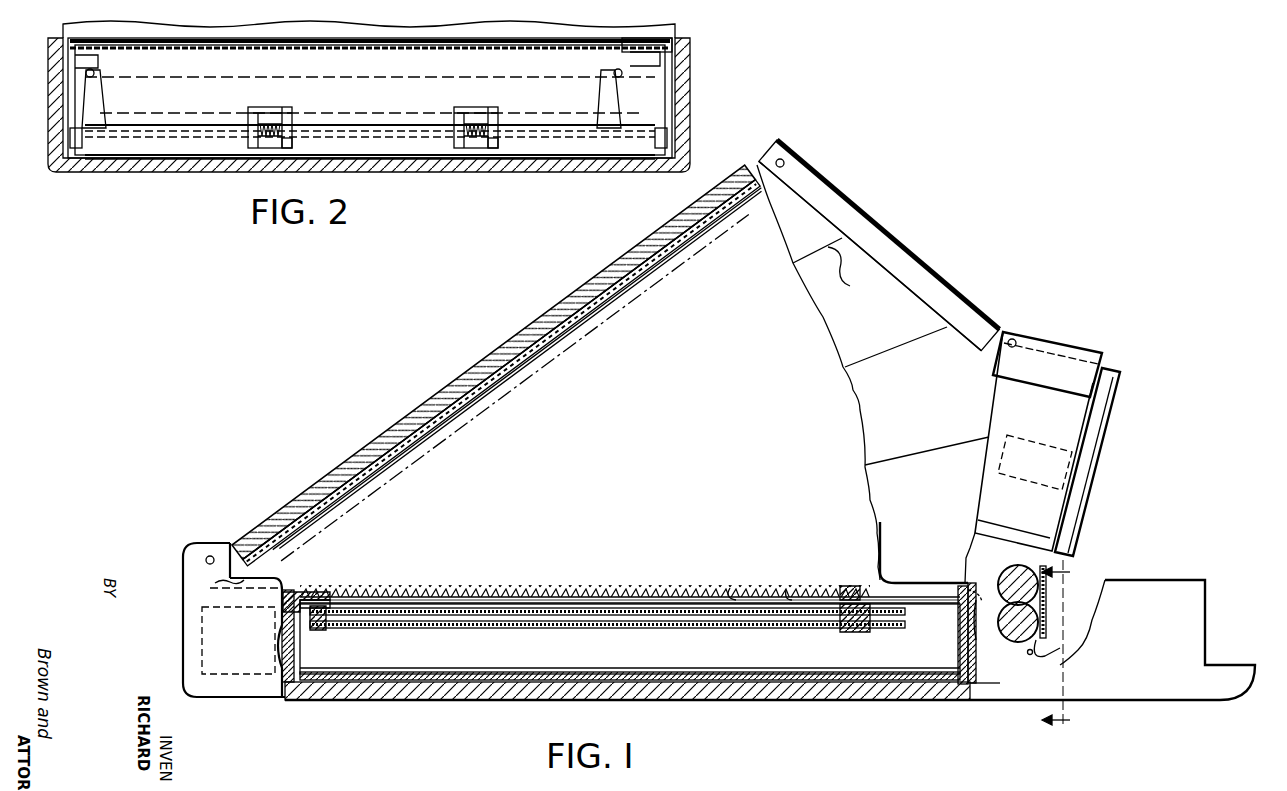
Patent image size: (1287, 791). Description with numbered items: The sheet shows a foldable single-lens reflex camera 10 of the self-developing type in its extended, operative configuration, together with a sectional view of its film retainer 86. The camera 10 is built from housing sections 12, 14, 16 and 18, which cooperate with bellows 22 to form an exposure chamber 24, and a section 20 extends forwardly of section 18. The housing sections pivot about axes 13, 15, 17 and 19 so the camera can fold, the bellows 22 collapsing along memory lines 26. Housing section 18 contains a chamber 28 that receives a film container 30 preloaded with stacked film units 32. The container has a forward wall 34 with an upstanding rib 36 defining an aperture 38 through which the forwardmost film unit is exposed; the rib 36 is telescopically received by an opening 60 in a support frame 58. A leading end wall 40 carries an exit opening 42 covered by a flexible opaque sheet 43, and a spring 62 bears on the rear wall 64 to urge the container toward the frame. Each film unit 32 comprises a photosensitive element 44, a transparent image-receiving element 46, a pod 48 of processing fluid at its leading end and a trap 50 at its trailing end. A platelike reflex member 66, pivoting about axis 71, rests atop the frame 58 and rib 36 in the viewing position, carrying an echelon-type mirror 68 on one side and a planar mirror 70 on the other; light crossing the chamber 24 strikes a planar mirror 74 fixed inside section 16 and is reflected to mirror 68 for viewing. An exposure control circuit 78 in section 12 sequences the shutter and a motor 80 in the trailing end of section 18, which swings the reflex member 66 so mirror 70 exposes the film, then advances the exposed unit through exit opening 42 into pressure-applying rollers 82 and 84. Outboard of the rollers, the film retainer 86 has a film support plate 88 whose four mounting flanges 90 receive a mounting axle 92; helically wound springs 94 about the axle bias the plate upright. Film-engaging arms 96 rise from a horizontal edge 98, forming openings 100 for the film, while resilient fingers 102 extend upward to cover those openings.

In FIG. 1, the camera 10 is at (402, 366).
In FIG. 1, the housing section 12 is at (1105, 455).
In FIG. 1, the axis 13 is at (1016, 340).
In FIG. 1, the housing section 14 is at (906, 235).
In FIG. 1, the axis 15 is at (786, 162).
In FIG. 1, the housing section 16 is at (390, 428).
In FIG. 1, the axis 17 is at (212, 556).
In FIG. 1, the housing section 18 is at (360, 712).
In FIG. 1, the axis 19 is at (962, 578).
In FIG. 1, the section 20 is at (1214, 640).
In FIG. 1, the bellows 22 is at (940, 409).
In FIG. 1, the exposure chamber 24 is at (400, 505).
In FIG. 1, the memory lines 26 is at (846, 277).
In FIG. 1, the chamber 28 is at (288, 698).
In FIG. 1, the film container 30 is at (420, 690).
In FIG. 1, the film units 32 is at (494, 632).
In FIG. 1, the forward wall 34 is at (912, 583).
In FIG. 1, the upstanding rib 36 is at (850, 588).
In FIG. 1, the aperture 38 is at (790, 590).
In FIG. 1, the leading end wall 40 is at (972, 660).
In FIG. 1, the exit opening 42 is at (978, 630).
In FIG. 1, the flexible opaque sheet 43 is at (960, 640).
In FIG. 1, the photosensitive element 44 is at (580, 617).
In FIG. 1, the image-receiving element 46 is at (660, 608).
In FIG. 1, the pod 48 is at (894, 628).
In FIG. 1, the fluid reservoir or trap 50 is at (326, 626).
In FIG. 1, the support frame 58 is at (305, 594).
In FIG. 1, the opening 60 is at (330, 596).
In FIG. 1, the spring 62 is at (630, 674).
In FIG. 1, the rear wall 64 is at (716, 676).
In FIG. 1, the reflex member 66 is at (682, 580).
In FIG. 1, the echelon-type mirror 68 is at (628, 590).
In FIG. 1, the planar mirror 70 is at (732, 590).
In FIG. 1, the axis 71 is at (239, 591).
In FIG. 1, the planar mirror 74 is at (690, 250).
In FIG. 1, the exposure control circuit 78 is at (1010, 476).
In FIG. 1, the motor 80 is at (230, 676).
In FIG. 1, the pressure-applying roller 82 is at (1006, 568).
In FIG. 1, the pressure-applying roller 84 is at (1018, 642).
In FIG. 2, the film retainer 86 is at (640, 38).
In FIG. 1, the film retainer 86 is at (1052, 630).
In FIG. 2, the film support plate 88 is at (392, 106).
In FIG. 2, the mounting flanges 90 is at (82, 140).
In FIG. 2, the mounting axle 92 is at (185, 132).
In FIG. 2, the helically wound springs 94 is at (270, 124).
In FIG. 2, the film-engaging arms 96 is at (100, 62).
In FIG. 2, the horizontal edge 98 is at (235, 70).
In FIG. 2, the openings 100 is at (94, 76).
In FIG. 2, the resilient fingers 102 is at (104, 102).